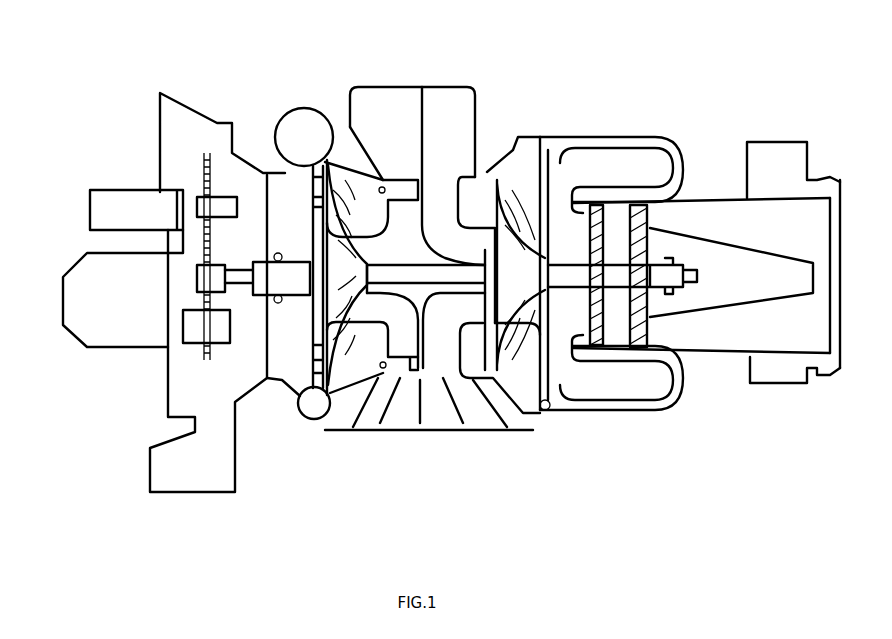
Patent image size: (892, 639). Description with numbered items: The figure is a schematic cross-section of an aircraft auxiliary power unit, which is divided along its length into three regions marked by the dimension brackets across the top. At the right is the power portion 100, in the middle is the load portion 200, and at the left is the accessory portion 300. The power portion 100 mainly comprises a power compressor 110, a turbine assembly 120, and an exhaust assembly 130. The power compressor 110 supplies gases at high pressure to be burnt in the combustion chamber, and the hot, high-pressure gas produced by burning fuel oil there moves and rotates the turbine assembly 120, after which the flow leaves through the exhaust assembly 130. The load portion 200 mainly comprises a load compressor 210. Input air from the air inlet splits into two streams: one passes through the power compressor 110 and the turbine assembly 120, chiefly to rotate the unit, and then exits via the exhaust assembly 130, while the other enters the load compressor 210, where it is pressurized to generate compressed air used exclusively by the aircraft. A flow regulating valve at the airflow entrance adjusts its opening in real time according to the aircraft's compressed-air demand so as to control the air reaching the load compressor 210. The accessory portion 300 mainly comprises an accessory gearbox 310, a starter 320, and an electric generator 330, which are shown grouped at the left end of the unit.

The turbine housing section 100 is at (808, 13).
The turbine housing 110 is at (549, 411).
The fastening studs 120 is at (645, 335).
The exhaust outlet / diffuser 130 is at (787, 367).
The center housing section 200 is at (469, 13).
The center housing inlet 210 is at (330, 338).
The compressor housing section 300 is at (248, 43).
The compressor housing 310 is at (188, 395).
The actuator housing 320 is at (82, 320).
The actuator cover 330 is at (90, 193).